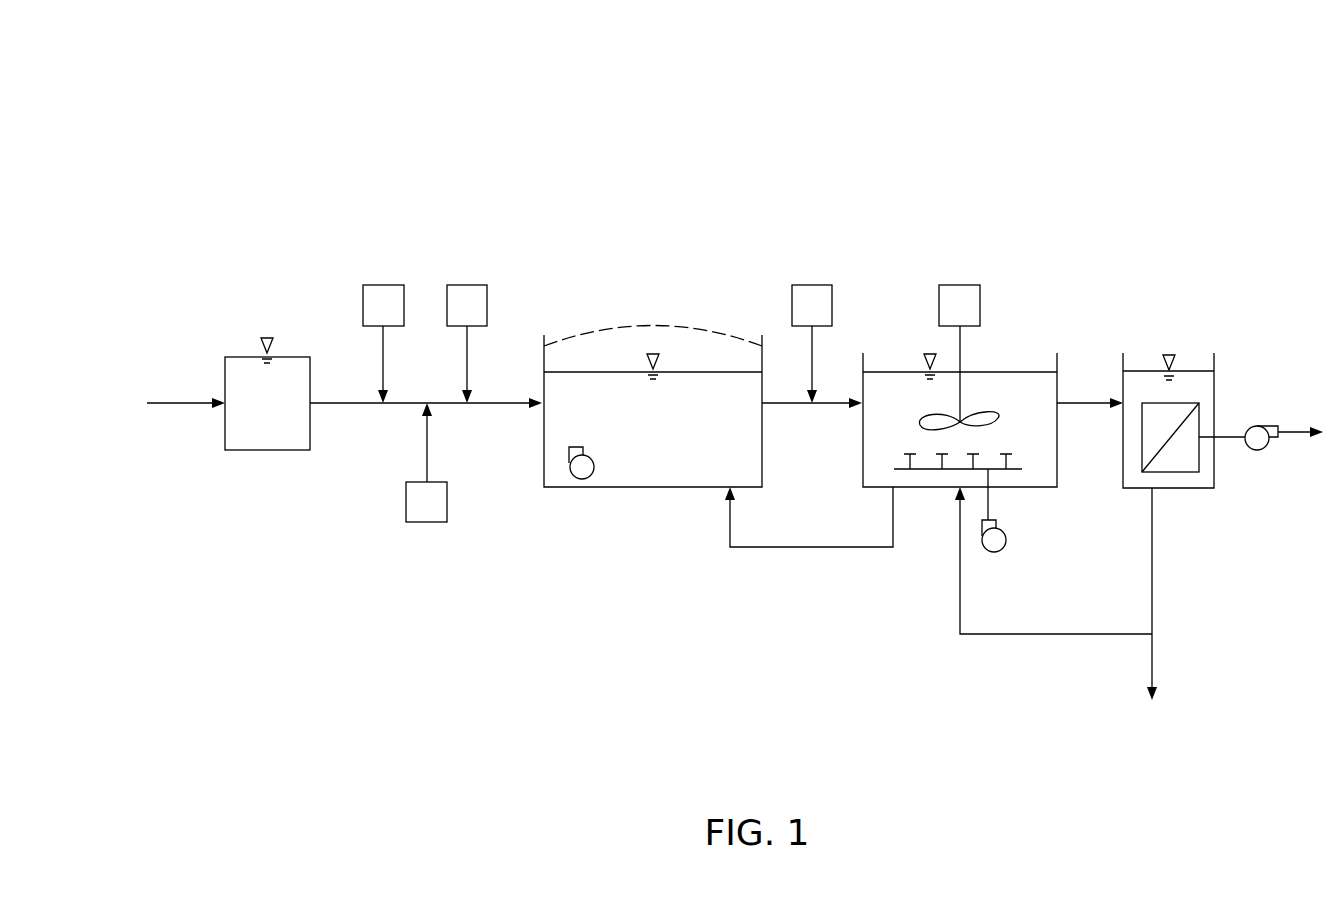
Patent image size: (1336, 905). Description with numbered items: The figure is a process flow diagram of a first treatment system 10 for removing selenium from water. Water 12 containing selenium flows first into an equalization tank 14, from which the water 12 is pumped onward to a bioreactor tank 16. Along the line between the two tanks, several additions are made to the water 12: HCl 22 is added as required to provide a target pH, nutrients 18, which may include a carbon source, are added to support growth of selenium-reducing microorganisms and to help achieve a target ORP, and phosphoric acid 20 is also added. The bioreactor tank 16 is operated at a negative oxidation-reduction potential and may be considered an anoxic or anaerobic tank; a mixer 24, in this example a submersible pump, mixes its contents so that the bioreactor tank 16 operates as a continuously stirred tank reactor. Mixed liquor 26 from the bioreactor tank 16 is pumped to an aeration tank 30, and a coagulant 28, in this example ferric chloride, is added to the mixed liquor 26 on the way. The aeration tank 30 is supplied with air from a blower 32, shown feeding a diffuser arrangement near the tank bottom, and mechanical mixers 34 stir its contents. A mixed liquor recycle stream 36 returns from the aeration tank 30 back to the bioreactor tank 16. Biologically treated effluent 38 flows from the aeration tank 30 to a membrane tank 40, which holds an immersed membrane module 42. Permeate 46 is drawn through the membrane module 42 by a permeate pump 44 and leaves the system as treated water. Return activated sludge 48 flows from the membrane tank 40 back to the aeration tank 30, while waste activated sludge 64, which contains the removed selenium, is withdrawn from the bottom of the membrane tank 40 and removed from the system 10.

The first treatment system 10 is at (1040, 178).
The water 12 is at (186, 402).
The equalization tank 14 is at (243, 355).
The bioreactor tank 16 is at (653, 490).
The nutrients 18 is at (429, 525).
The phosphoric acid 20 is at (467, 283).
The HCl 22 is at (383, 283).
The mixer 24 is at (579, 480).
The mixed liquor 26 is at (785, 407).
The coagulant 28 is at (812, 283).
The aeration tank 30 is at (930, 490).
The blower 32 is at (993, 553).
The mechanical mixers 34 is at (961, 283).
The mixed liquor recycle stream 36 is at (812, 550).
The biologically treated effluent 38 is at (1077, 401).
The membrane tank 40 is at (1122, 360).
The membrane module 42 is at (1182, 475).
The permeate pump 44 is at (1255, 400).
The permeate 46 is at (1292, 426).
The return activated sludge 48 is at (1064, 637).
The waste activated sludge 64 is at (1152, 652).